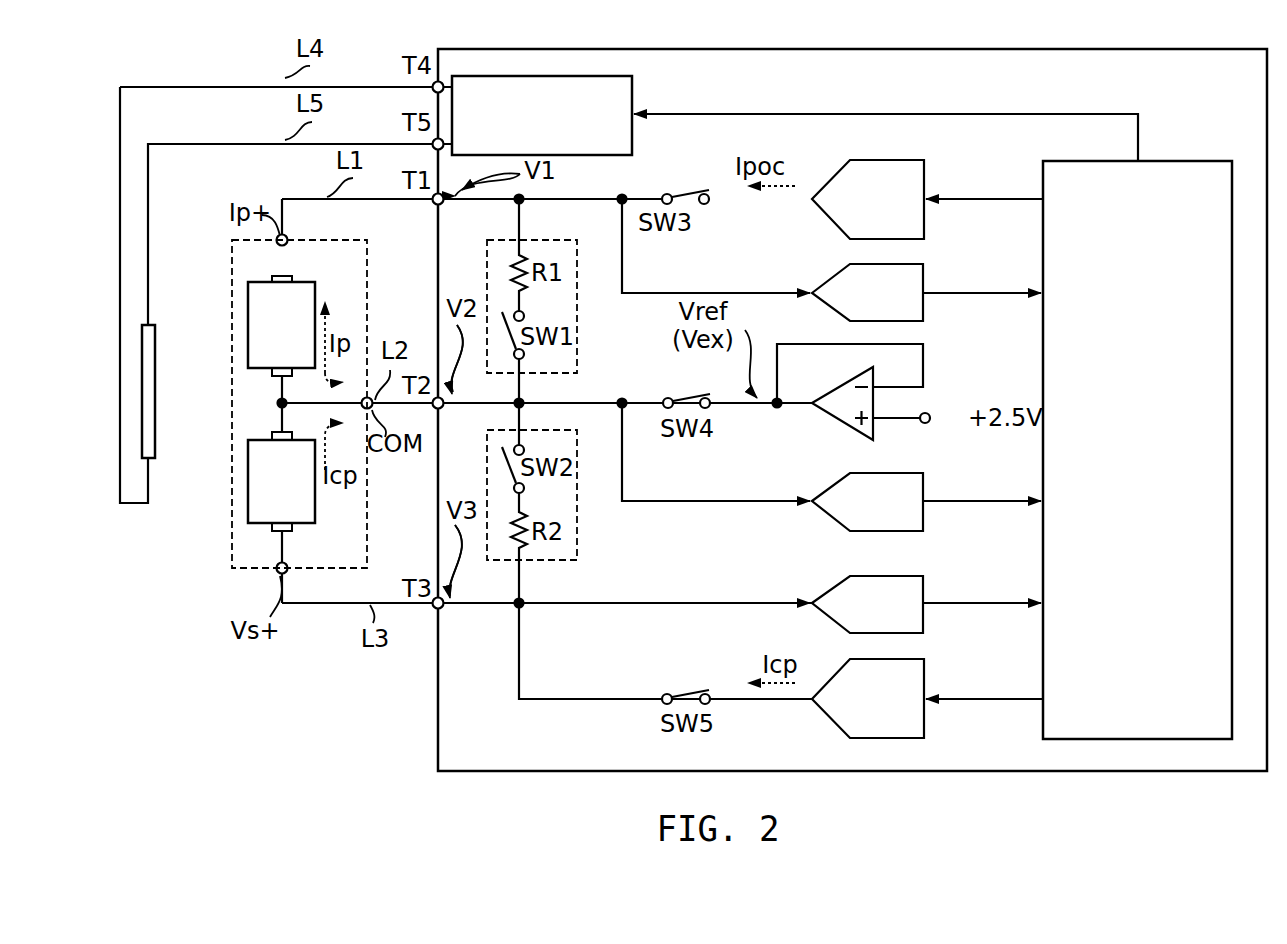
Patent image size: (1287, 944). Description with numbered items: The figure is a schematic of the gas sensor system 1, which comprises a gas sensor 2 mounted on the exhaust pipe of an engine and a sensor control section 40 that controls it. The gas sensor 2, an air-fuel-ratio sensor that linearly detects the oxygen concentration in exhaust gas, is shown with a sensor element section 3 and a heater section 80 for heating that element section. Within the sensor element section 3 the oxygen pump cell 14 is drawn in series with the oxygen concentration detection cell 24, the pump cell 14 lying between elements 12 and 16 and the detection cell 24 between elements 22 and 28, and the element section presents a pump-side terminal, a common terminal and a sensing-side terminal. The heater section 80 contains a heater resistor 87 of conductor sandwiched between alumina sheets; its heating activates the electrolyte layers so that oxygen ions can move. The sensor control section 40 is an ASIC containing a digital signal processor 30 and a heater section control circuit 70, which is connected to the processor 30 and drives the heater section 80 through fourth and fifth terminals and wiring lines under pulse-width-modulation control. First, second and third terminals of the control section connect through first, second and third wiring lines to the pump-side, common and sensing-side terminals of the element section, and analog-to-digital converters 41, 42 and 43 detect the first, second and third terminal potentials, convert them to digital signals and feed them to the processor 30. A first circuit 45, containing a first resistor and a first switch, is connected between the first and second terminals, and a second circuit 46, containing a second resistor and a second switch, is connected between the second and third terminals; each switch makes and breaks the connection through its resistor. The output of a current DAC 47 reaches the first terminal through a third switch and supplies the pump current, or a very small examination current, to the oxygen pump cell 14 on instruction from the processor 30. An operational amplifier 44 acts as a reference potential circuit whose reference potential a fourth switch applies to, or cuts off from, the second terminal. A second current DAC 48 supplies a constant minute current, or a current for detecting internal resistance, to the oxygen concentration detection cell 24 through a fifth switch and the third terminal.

The gas sensor system 1 is at (342, 676).
The gas sensor 2 is at (241, 463).
The sensor element section 3 is at (274, 444).
The first electrode of Ip cell 12 is at (272, 278).
The oxygen pump cell 14 is at (248, 326).
The second electrode of Ip cell 16 is at (272, 373).
The first electrode of Vs cell 22 is at (272, 436).
The oxygen concentration detection cell 24 is at (248, 481).
The second electrode of Vs cell 28 is at (272, 529).
The digital signal processor 30 is at (1207, 161).
The sensor control section 40 is at (800, 48).
The A/D converter 41 is at (923, 266).
The A/D converter 42 is at (923, 476).
The A/D converter 43 is at (923, 578).
The operational amplifier 44 is at (832, 421).
The first circuit 45 is at (577, 346).
The second circuit 46 is at (577, 540).
The current DAC 47 is at (924, 162).
The current DAC 48 is at (924, 662).
The heater section control circuit 70 is at (632, 85).
The heater section 80 is at (139, 486).
The heater resistor 87 is at (155, 460).